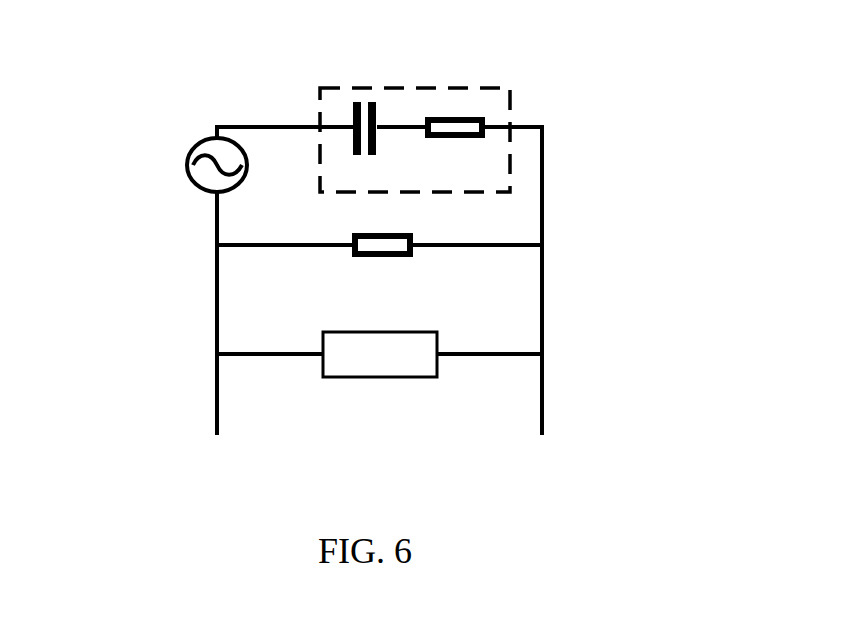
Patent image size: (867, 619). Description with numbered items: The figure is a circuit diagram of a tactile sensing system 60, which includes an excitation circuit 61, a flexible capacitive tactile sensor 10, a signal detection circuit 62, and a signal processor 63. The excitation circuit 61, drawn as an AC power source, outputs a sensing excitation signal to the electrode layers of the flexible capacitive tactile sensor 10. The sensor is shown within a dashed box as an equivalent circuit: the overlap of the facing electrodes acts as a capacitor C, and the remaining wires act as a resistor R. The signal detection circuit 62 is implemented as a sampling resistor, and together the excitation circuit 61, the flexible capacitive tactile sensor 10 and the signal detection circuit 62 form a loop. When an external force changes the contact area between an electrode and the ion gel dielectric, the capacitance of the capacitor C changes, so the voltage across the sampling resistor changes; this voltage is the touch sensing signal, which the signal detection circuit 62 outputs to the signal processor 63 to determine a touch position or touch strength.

The tactile sensing system 60 is at (398, 48).
The flexible capacitive tactile sensor 10 is at (335, 88).
The excitation circuit 61 is at (200, 142).
The signal detection circuit 62 is at (397, 233).
The signal processor 63 is at (380, 354).